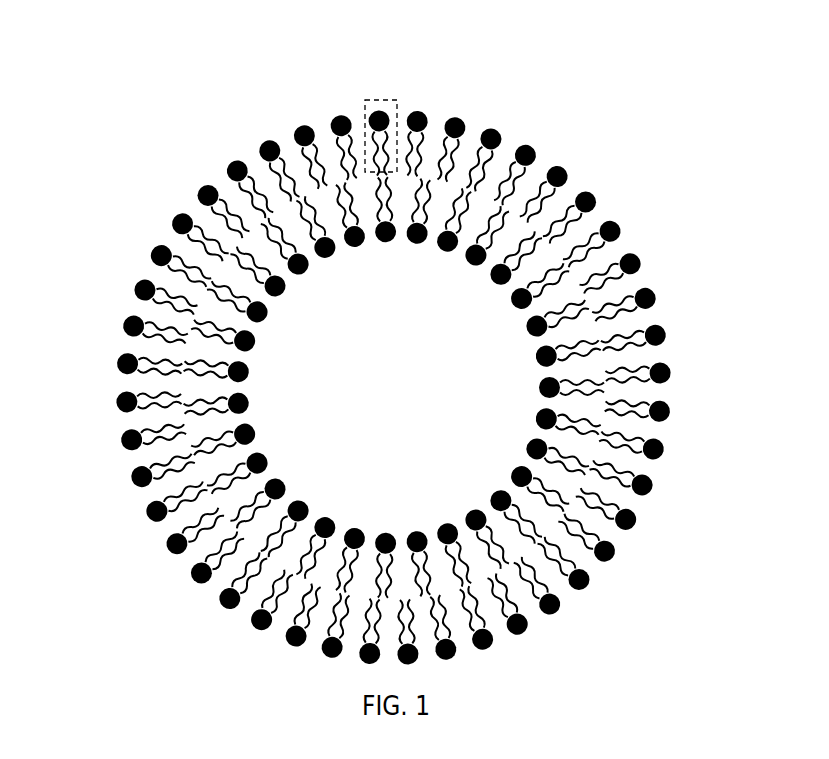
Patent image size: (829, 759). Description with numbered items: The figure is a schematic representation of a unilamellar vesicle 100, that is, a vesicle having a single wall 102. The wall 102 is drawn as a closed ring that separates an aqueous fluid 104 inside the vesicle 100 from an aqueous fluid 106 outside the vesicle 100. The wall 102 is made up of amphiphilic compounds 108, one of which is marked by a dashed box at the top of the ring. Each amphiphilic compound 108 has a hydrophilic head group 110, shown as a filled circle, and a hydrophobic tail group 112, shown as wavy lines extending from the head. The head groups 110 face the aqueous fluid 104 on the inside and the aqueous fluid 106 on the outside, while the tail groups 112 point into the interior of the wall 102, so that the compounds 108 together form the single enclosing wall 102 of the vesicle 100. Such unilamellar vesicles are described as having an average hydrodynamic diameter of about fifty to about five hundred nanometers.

The unilamellar vesicle 100 is at (140, 47).
The wall 102 is at (172, 232).
The aqueous fluid 104 is at (412, 391).
The aqueous fluid 106 is at (688, 620).
The amphiphilic compounds 108 is at (390, 100).
The hydrophilic head group 110 is at (615, 232).
The hydrophobic tail group 112 is at (637, 380).